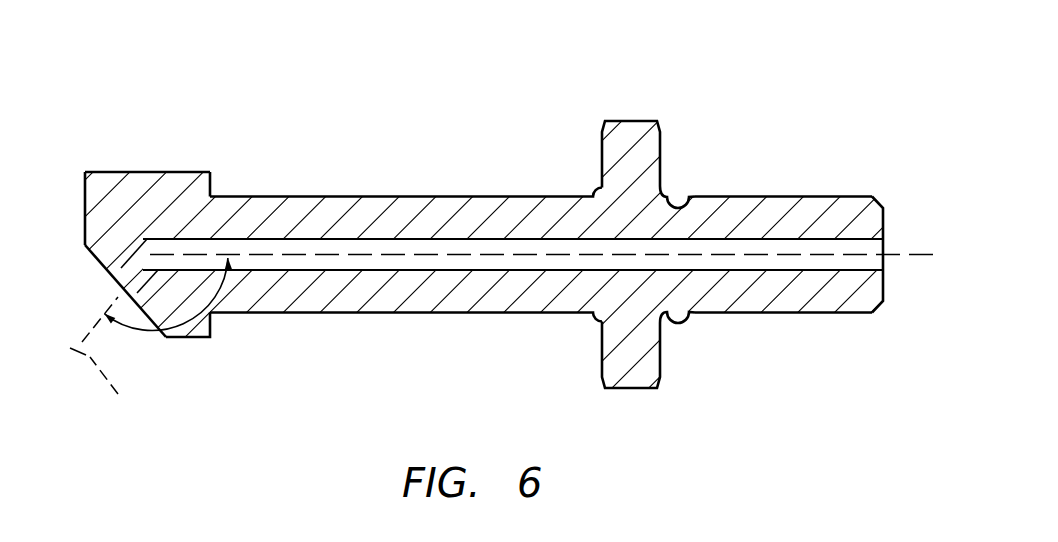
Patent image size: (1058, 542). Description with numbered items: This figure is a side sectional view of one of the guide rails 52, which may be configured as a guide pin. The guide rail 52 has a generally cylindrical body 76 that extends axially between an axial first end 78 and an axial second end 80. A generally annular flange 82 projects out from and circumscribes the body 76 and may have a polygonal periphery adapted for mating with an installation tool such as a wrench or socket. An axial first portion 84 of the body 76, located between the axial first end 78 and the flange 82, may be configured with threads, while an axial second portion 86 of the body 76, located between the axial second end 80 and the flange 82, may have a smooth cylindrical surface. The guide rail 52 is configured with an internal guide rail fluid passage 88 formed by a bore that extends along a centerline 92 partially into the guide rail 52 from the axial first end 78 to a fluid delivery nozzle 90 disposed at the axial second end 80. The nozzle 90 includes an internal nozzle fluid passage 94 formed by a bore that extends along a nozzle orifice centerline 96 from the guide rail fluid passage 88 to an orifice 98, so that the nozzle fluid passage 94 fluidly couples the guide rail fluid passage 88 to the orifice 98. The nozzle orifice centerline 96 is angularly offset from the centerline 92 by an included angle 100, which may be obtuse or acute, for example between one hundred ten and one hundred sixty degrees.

The guide rail 52 is at (818, 93).
The body 76 is at (483, 176).
The axial first end 78 is at (883, 222).
The axial second end 80 is at (85, 197).
The flange 82 is at (632, 111).
The axial first portion 84 is at (778, 329).
The axial second portion 86 is at (392, 333).
The guide rail fluid passage 88 is at (412, 240).
The fluid delivery nozzle 90 is at (167, 162).
The centerline 92 is at (502, 255).
The nozzle fluid passage 94 is at (128, 252).
The nozzle orifice centerline 96 is at (118, 333).
The orifice 98 is at (120, 287).
The included angle 100 is at (185, 324).